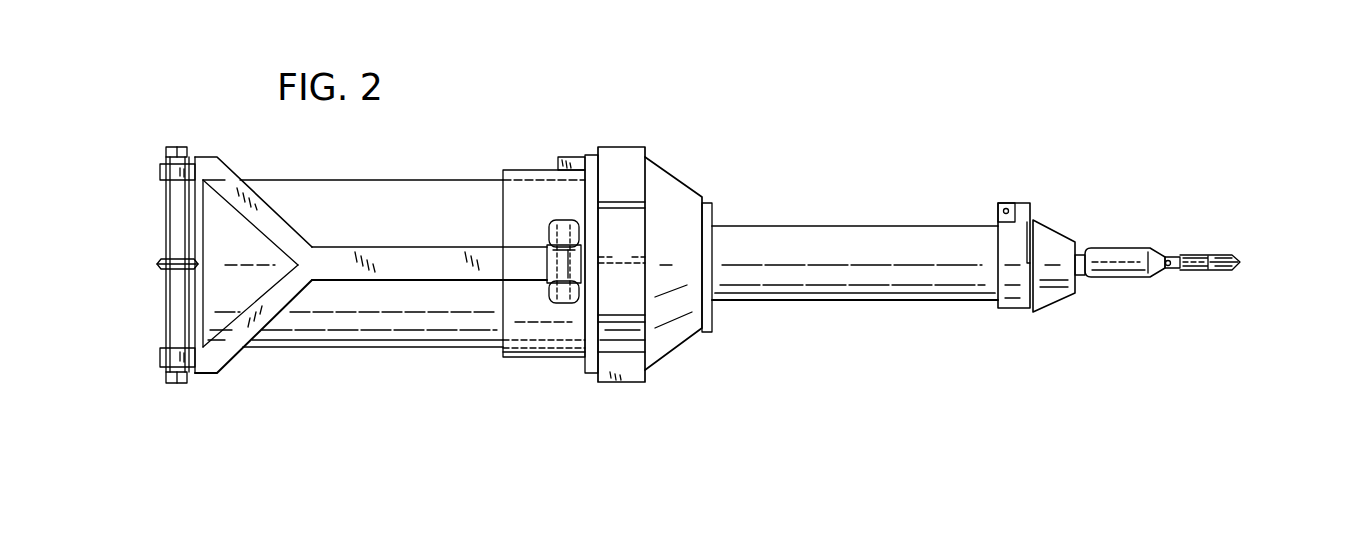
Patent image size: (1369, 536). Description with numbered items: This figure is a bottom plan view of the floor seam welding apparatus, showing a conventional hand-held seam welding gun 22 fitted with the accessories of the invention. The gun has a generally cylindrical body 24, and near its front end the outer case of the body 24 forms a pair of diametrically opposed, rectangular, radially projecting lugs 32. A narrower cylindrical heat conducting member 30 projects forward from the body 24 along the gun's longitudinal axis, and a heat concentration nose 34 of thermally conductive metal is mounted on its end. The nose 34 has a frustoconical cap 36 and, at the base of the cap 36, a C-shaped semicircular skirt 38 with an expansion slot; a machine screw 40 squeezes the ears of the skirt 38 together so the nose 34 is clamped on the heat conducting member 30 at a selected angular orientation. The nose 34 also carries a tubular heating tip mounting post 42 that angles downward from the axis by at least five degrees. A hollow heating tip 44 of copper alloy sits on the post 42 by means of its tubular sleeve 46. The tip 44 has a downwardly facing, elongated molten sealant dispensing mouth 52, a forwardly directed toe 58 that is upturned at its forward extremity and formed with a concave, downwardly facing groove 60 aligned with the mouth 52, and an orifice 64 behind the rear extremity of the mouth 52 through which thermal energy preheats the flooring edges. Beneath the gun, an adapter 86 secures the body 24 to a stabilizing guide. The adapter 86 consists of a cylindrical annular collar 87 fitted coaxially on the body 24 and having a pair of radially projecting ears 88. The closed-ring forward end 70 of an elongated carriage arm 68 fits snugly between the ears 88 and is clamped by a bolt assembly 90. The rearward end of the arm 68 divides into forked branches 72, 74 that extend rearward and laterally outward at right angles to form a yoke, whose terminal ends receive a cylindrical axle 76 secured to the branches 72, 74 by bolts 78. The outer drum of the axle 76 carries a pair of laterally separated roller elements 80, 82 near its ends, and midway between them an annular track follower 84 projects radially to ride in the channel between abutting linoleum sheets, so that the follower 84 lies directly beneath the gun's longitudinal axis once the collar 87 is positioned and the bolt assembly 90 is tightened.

The seam welding gun 22 is at (410, 347).
The body 24 is at (365, 190).
The heat conducting member 30 is at (880, 235).
The lugs 32 is at (568, 157).
The heat concentration nose 34 is at (1060, 221).
The cap 36 is at (1050, 290).
The skirt 38 is at (1012, 300).
The machine screw 40 is at (1003, 205).
The heating tip mounting post 42 is at (1080, 253).
The hollow heating tip 44 is at (1137, 248).
The tubular sleeve 46 is at (1120, 265).
The molten sealant dispensing mouth 52 is at (1208, 270).
The toe 58 is at (1235, 270).
The groove 60 is at (1240, 258).
The orifice 64 is at (1172, 260).
The carriage arm 68 is at (405, 258).
The forward end 70 is at (548, 258).
The forked branch 72 is at (232, 178).
The forked branch 74 is at (225, 348).
The axle 76 is at (168, 215).
The bolts 78 is at (175, 148).
The roller element 80 is at (160, 173).
The roller element 82 is at (160, 358).
The track follower 84 is at (160, 265).
The adapter 86 is at (550, 357).
The collar 87 is at (517, 187).
The ears 88 is at (548, 240).
The bolt assembly 90 is at (563, 222).